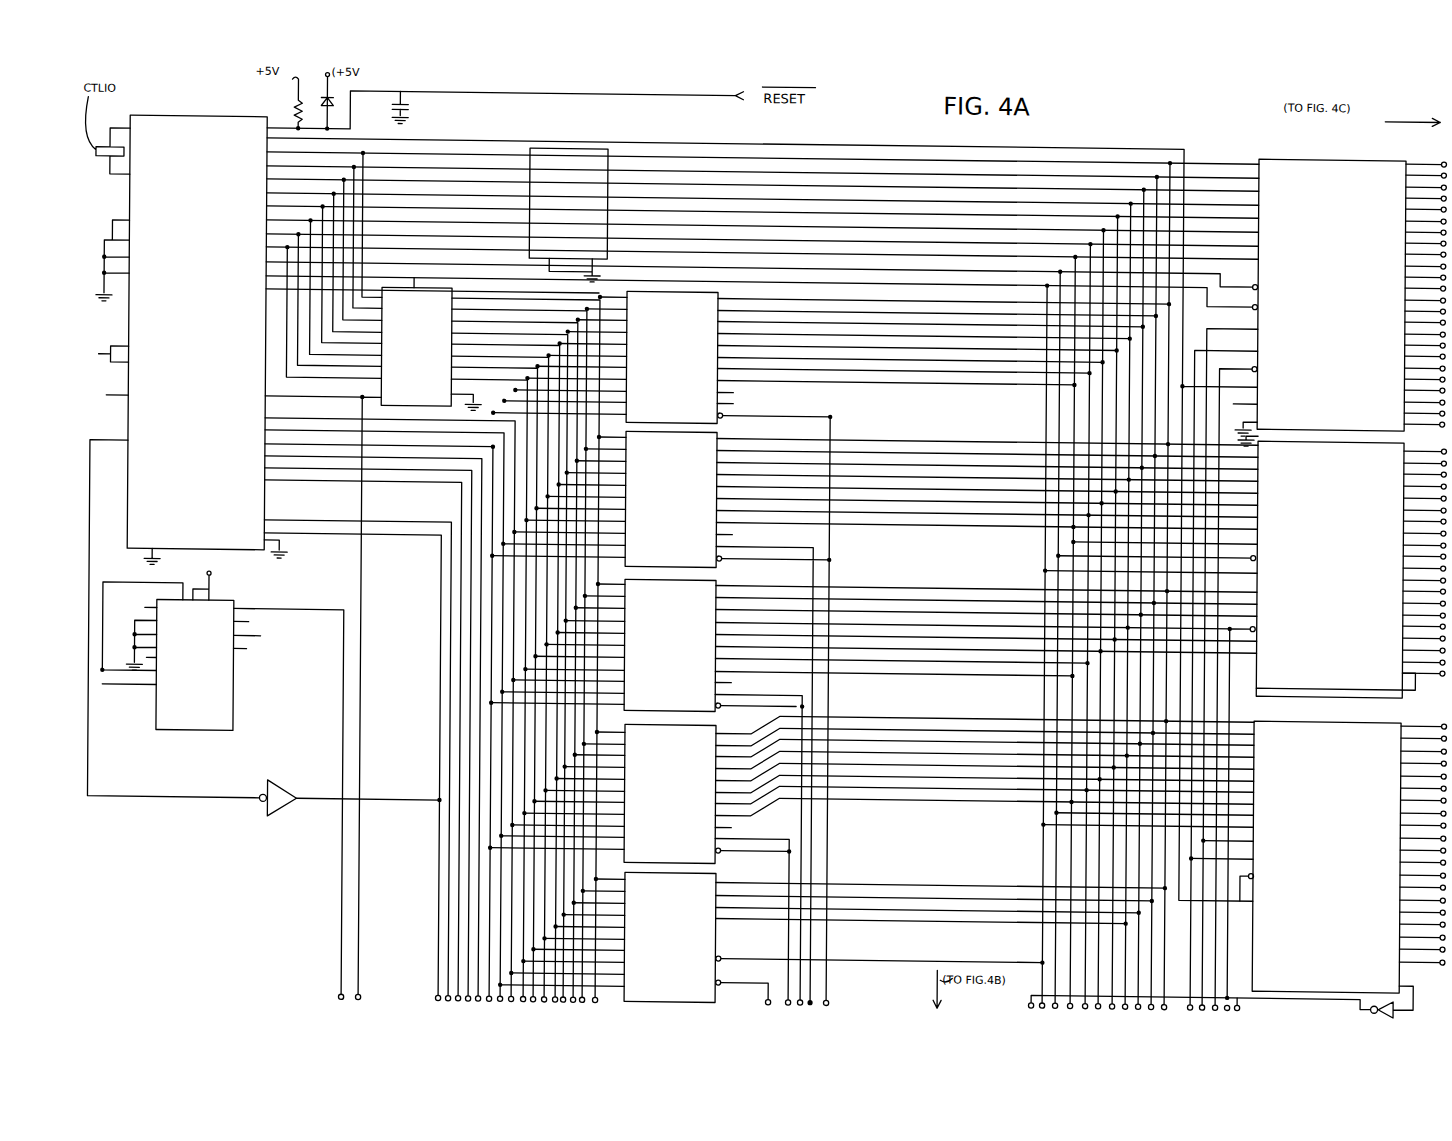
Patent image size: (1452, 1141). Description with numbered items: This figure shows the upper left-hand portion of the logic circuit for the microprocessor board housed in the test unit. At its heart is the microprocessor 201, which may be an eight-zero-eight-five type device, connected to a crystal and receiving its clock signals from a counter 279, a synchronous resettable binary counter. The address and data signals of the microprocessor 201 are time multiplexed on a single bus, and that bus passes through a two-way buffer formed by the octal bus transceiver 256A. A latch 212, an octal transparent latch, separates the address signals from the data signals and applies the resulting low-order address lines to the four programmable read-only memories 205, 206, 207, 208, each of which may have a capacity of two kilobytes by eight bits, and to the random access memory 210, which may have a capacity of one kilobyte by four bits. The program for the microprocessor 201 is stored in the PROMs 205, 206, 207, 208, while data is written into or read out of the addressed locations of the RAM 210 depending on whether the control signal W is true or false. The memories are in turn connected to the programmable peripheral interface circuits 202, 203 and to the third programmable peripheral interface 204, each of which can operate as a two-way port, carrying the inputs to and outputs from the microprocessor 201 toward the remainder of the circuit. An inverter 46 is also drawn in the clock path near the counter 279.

The microprocessor 201 is at (173, 132).
The latch 212 is at (410, 286).
The octal bus transceiver 256A is at (566, 150).
The programmable read-only memory 205 is at (668, 295).
The programmable read-only memory 206 is at (707, 465).
The programmable read-only memory 207 is at (705, 612).
The programmable read-only memory 208 is at (698, 752).
The random access memory 210 is at (690, 926).
The programmable peripheral interface circuit 202 is at (1313, 153).
The programmable peripheral interface circuit 203 is at (1283, 465).
The programmable peripheral interface 204 is at (1268, 727).
The counter 279 is at (232, 712).
The inverter 46 is at (343, 797).